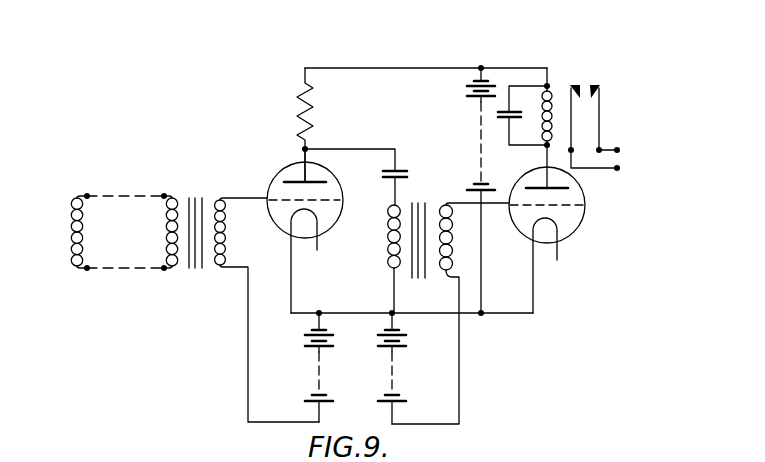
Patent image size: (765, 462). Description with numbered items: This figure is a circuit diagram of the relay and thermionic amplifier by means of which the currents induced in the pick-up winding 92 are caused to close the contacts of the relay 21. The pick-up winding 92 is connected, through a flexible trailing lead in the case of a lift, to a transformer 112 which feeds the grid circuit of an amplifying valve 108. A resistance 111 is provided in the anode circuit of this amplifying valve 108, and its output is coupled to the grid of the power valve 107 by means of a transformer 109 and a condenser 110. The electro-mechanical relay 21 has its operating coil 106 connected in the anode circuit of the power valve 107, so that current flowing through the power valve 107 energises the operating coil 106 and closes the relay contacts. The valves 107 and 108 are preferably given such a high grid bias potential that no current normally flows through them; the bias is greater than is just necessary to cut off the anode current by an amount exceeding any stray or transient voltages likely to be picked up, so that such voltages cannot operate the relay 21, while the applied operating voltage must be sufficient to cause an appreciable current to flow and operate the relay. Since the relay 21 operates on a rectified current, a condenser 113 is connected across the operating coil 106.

The pick-up winding 92 is at (86, 222).
The transformer 112 is at (206, 300).
The amplifying valve 108 is at (275, 177).
The resistance 111 is at (312, 116).
The condenser 110 is at (408, 176).
The transformer 109 is at (428, 309).
The condenser 113 is at (498, 113).
The operating coil 106 is at (551, 93).
The relay 21 is at (588, 129).
The power valve 107 is at (577, 223).